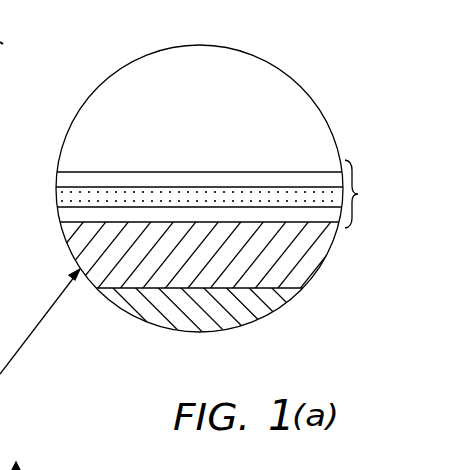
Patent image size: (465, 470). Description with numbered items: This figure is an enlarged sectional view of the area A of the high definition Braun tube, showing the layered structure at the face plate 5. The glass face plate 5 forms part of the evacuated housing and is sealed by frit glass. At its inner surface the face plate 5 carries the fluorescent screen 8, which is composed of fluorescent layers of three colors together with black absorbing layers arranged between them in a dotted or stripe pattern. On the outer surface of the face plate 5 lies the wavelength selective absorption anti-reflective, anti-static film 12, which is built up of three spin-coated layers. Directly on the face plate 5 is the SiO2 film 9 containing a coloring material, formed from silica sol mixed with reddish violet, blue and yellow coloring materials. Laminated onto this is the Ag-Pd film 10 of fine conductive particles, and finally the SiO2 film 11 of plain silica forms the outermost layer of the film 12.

The face plate 5 is at (318, 267).
The fluorescent screen 8 is at (208, 313).
The SiO2 film containing a coloring material 9 is at (61, 216).
The Ag-Pd film 10 is at (58, 196).
The SiO2 film 11 is at (57, 179).
The wavelength selective absorption anti-reflective, anti-static film 12 is at (200, 212).
The area A is at (275, 63).